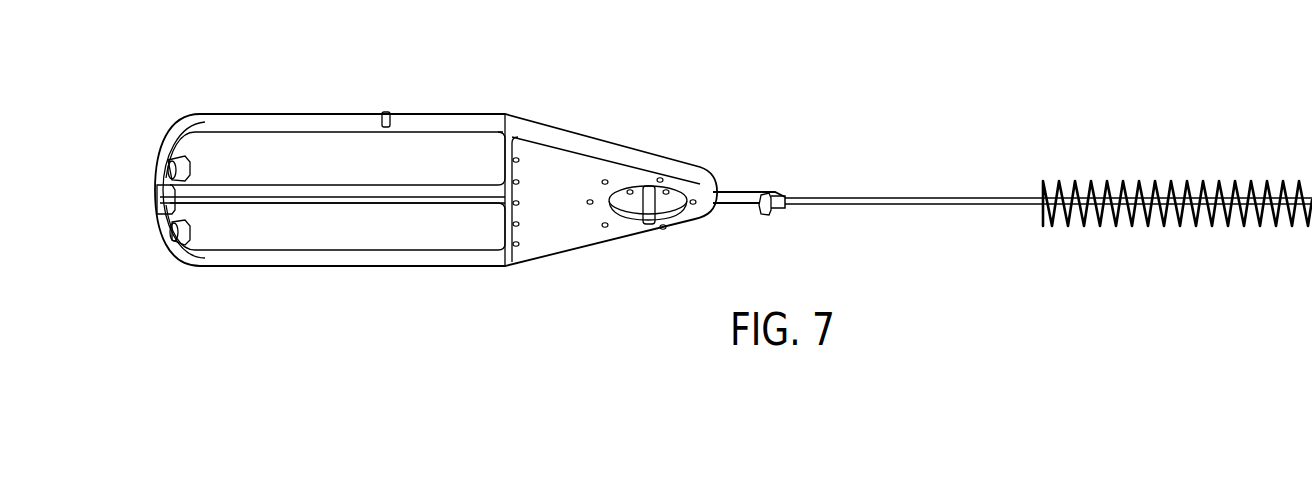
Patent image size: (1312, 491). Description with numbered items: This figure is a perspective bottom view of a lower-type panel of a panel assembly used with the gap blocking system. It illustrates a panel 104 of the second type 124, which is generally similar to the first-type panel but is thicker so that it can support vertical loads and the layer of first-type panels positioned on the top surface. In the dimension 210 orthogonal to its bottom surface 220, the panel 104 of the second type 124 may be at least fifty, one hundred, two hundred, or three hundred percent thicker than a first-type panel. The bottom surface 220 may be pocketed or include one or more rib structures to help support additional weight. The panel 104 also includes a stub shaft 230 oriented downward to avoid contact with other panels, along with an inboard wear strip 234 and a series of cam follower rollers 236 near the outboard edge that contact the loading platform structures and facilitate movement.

The panel 104 is at (246, 74).
The second type 124 is at (303, 114).
The dimension 210 is at (392, 114).
The bottom surface 220 is at (341, 233).
The inboard wear strip 234 is at (425, 194).
The cam follower rollers 236 is at (157, 203).
The stub shaft 230 is at (635, 207).